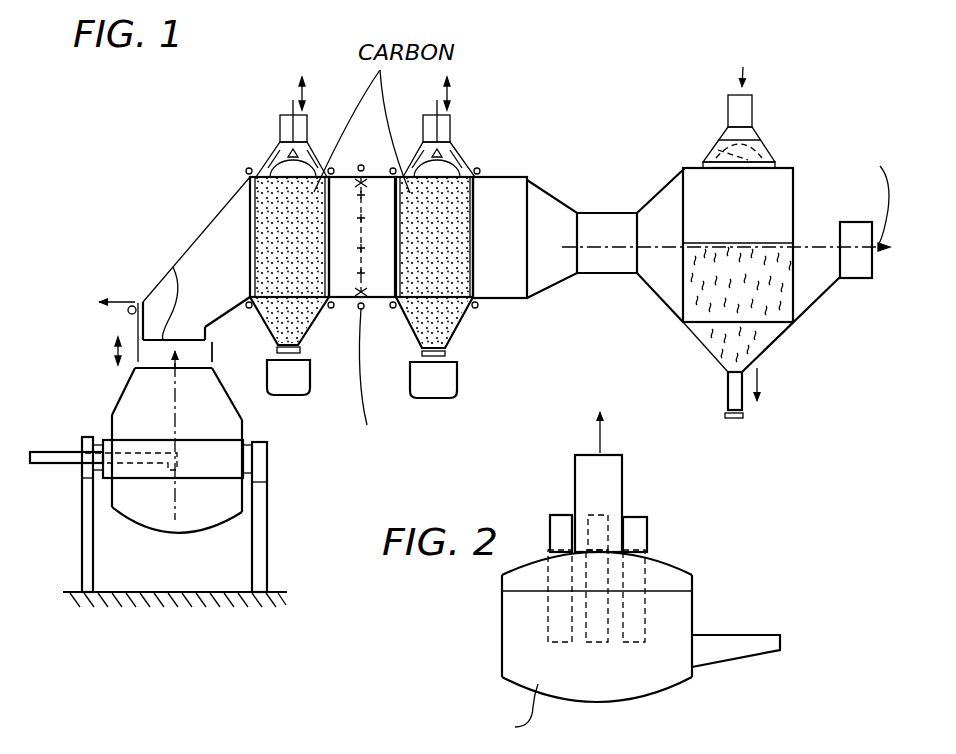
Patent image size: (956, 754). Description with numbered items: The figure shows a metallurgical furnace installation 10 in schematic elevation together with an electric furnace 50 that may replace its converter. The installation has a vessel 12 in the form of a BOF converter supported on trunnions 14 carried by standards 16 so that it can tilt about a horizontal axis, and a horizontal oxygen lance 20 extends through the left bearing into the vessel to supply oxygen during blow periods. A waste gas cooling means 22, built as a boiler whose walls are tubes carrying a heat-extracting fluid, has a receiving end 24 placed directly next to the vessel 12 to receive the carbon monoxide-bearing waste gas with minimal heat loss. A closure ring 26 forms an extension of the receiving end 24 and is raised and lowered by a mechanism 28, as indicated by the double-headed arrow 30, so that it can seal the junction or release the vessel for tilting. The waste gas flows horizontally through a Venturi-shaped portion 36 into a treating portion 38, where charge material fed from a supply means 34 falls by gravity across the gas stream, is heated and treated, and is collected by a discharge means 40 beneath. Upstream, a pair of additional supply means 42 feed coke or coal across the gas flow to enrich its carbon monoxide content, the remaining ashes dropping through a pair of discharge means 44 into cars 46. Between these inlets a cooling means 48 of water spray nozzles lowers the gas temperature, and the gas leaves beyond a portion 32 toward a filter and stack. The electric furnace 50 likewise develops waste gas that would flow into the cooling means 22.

In FIG. 1, the installation 10 is at (186, 222).
In FIG. 1, the vessel 12 is at (195, 523).
In FIG. 1, the trunnions 14 is at (247, 442).
In FIG. 1, the standards 16 is at (265, 562).
In FIG. 1, the horizontal oxygen lance 20 is at (38, 452).
In FIG. 1, the waste gas cooling means 22 is at (233, 287).
In FIG. 1, the receiving end 24 is at (195, 296).
In FIG. 1, the closure ring 26 is at (212, 352).
In FIG. 1, the mechanism 28 is at (130, 306).
In FIG. 1, the double-headed arrow 30 is at (116, 352).
In FIG. 1, the portion 32 is at (856, 278).
In FIG. 1, the supply means 34 is at (764, 124).
In FIG. 1, the Venturi-shaped portion 36 is at (543, 278).
In FIG. 1, the treating portion 38 is at (748, 211).
In FIG. 1, the discharge means 40 is at (721, 375).
In FIG. 1, the additional supply means 42 is at (282, 123).
In FIG. 1, the discharge means 44 is at (467, 324).
In FIG. 1, the cars 46 is at (448, 378).
In FIG. 1, the cooling means 48 is at (361, 166).
In FIG. 2, the electric furnace 50 is at (653, 682).